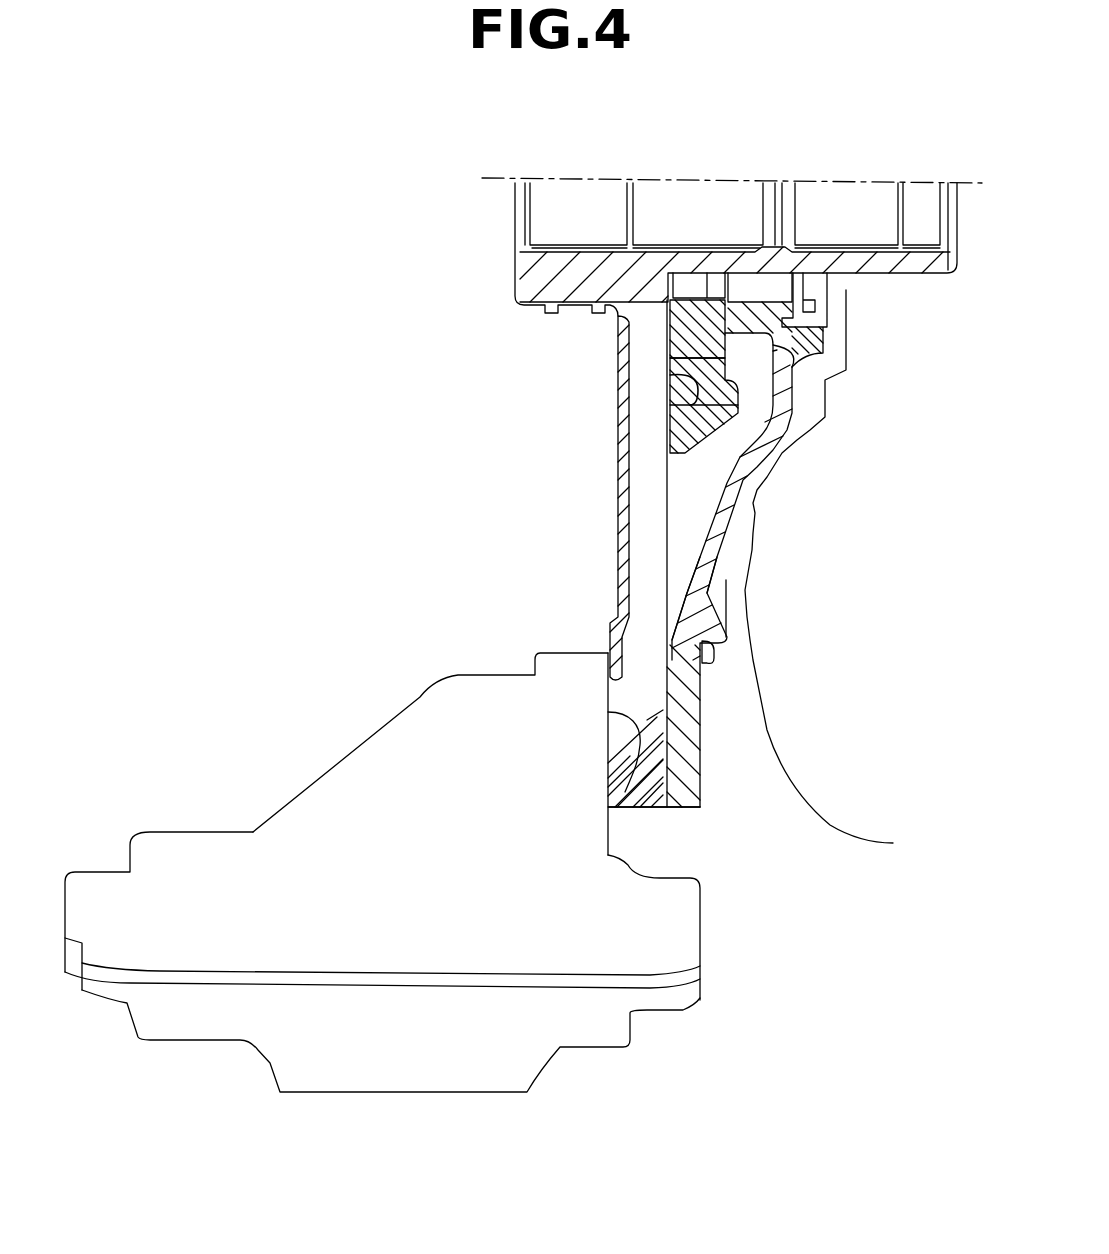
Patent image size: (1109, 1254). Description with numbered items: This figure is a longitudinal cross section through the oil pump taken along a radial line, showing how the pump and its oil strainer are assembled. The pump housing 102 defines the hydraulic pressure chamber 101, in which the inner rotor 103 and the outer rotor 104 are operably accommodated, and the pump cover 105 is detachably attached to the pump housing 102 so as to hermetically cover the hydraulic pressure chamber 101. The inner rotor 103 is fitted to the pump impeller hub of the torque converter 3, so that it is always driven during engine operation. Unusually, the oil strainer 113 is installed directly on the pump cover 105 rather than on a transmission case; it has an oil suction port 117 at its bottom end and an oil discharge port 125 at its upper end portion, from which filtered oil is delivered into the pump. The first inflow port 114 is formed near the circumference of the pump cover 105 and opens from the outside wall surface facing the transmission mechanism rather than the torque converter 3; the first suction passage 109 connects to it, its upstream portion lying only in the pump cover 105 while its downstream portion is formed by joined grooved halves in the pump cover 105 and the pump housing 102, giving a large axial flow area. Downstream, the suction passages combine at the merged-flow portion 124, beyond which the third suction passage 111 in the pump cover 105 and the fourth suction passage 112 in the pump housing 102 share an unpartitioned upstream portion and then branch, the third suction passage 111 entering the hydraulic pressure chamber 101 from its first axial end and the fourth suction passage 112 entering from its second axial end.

The torque converter 3 is at (858, 822).
The hydraulic pressure chamber 101 is at (716, 369).
The pump housing 102 is at (693, 777).
The inner rotor 103 is at (676, 346).
The outer rotor 104 is at (727, 367).
The pump cover 105 is at (638, 800).
The first suction passage 109 is at (643, 678).
The third suction passage 111 is at (637, 494).
The fourth suction passage 112 is at (748, 422).
The oil strainer 113 is at (700, 928).
The first inflow port 114 is at (670, 810).
The oil suction port 117 is at (493, 1095).
The merged-flow portion 124 is at (667, 568).
The oil discharge port 125 is at (603, 738).